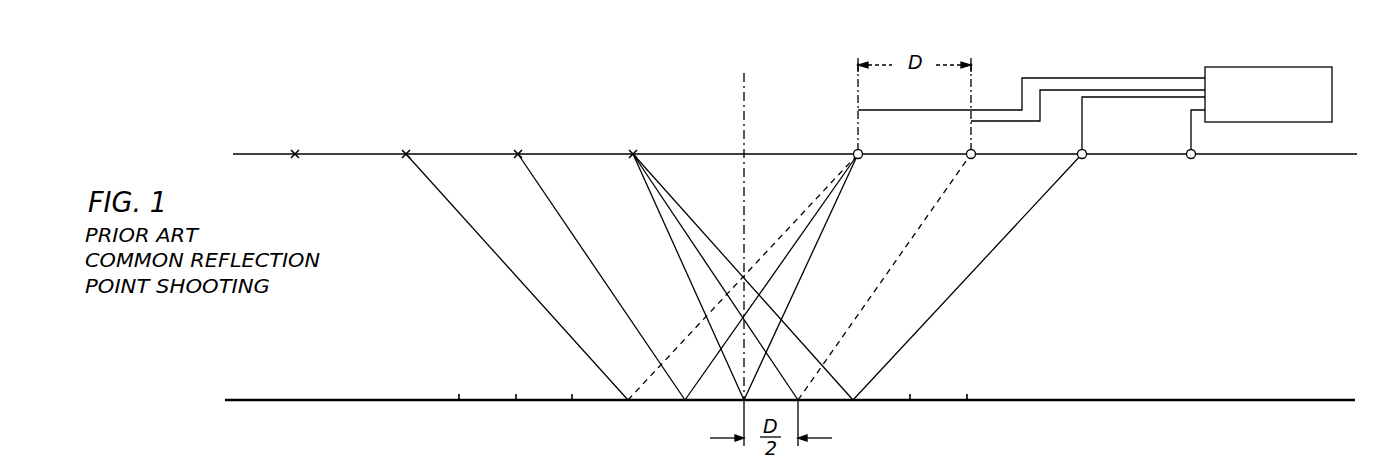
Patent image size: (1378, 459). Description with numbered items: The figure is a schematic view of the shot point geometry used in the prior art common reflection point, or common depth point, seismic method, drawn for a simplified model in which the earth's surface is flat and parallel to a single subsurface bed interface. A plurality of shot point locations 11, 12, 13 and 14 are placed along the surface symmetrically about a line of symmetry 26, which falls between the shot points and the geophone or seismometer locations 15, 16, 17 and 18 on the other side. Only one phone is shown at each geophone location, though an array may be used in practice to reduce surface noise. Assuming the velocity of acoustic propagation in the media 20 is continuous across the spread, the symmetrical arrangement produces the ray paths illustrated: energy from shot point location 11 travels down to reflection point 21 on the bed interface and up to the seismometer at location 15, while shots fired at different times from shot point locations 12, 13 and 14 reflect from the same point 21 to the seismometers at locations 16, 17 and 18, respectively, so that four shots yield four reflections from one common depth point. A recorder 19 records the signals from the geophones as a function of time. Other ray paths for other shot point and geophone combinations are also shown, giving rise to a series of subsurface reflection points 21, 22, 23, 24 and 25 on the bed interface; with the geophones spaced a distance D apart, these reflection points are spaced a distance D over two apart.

The shot point location 11 is at (637, 150).
The shot point location 12 is at (521, 150).
The shot point location 13 is at (409, 150).
The shot point location 14 is at (298, 149).
The geophone location 15 is at (862, 150).
The geophone location 16 is at (975, 150).
The geophone location 17 is at (1086, 150).
The geophone location 18 is at (1195, 150).
The recorder 19 is at (1264, 67).
The media 20 is at (1156, 300).
The common reflection point 21 is at (745, 300).
The subsurface reflection point 22 is at (688, 294).
The subsurface reflection point 23 is at (632, 294).
The subsurface reflection point 24 is at (802, 300).
The subsurface reflection point 25 is at (857, 294).
The line of symmetry 26 is at (746, 135).